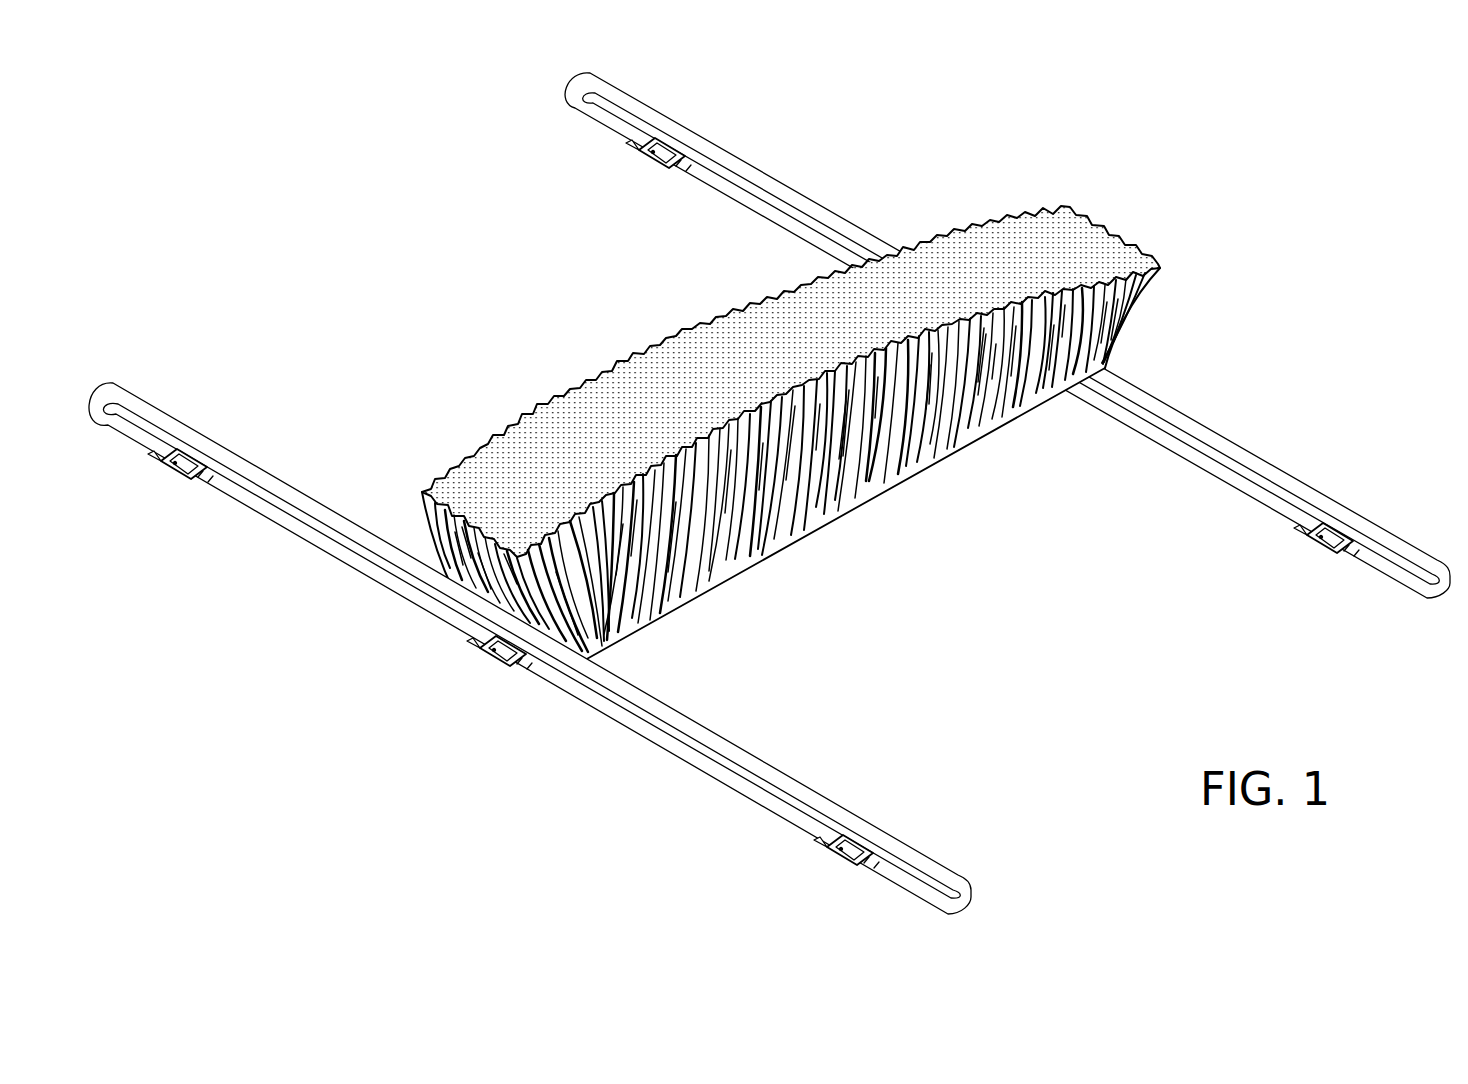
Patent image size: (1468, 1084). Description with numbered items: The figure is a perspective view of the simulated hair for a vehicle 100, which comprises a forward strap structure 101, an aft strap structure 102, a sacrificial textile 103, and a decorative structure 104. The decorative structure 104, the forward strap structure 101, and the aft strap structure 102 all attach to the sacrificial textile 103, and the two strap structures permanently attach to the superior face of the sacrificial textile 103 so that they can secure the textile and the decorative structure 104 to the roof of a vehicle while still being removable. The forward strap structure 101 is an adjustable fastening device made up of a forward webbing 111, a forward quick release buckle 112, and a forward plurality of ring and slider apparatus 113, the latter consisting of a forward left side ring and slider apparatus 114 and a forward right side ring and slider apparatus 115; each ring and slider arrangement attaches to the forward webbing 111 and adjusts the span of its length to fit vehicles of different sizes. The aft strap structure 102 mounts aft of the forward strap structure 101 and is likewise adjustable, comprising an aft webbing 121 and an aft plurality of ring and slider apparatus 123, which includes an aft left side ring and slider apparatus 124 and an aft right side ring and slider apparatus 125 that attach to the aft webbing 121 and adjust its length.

The simulated hair for a vehicle 100 is at (373, 213).
The forward strap structure 101 is at (917, 838).
The aft strap structure 102 is at (1290, 460).
The sacrificial textile 103 is at (785, 560).
The decorative structure 104 is at (662, 372).
The forward webbing 111 is at (620, 722).
The forward quick release buckle 112 is at (497, 668).
The forward plurality of ring and slider apparatus 113 is at (504, 699).
The forward left side ring and slider apparatus 114 is at (831, 857).
The forward right side ring and slider apparatus 115 is at (172, 477).
The aft webbing 121 is at (1253, 457).
The aft plurality of ring and slider apparatus 123 is at (958, 326).
The aft left side ring and slider apparatus 124 is at (1312, 553).
The aft right side ring and slider apparatus 125 is at (645, 165).